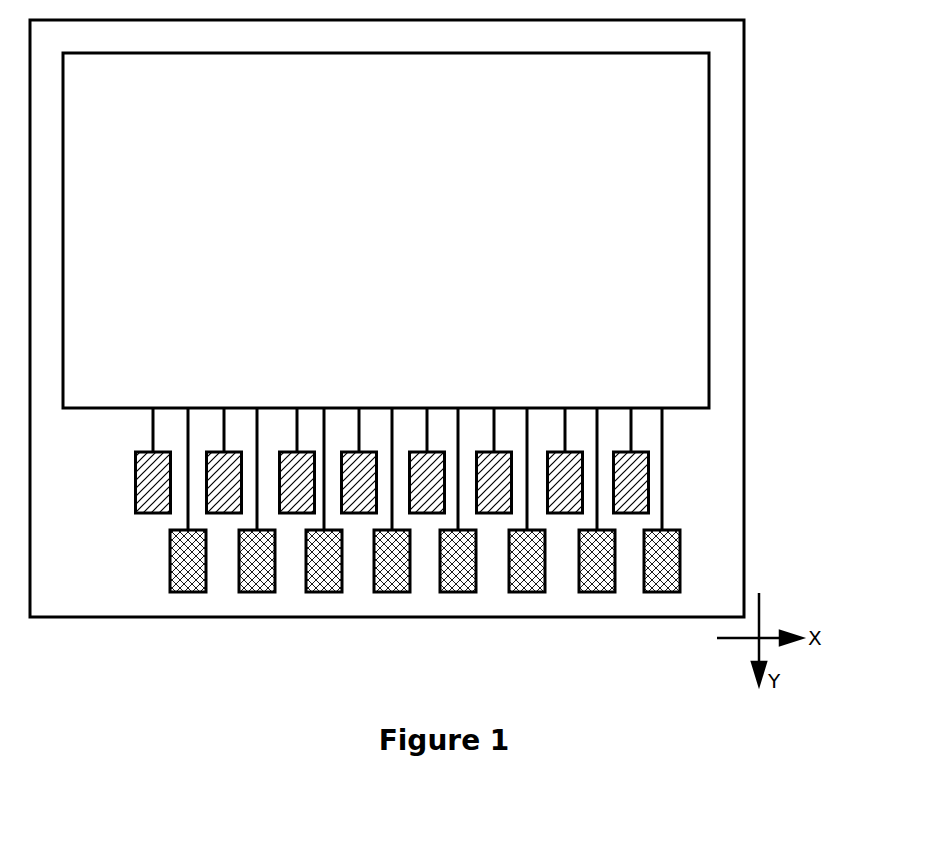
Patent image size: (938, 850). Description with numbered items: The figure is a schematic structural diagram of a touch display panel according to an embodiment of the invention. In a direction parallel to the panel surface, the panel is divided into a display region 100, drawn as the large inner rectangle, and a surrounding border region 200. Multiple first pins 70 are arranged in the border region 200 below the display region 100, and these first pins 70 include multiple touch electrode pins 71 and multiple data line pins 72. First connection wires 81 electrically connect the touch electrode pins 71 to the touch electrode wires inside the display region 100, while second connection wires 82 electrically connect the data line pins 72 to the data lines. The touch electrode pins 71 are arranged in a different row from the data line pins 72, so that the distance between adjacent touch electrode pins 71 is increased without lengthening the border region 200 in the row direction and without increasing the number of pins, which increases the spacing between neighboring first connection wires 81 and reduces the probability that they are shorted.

The display region 100 is at (675, 203).
The border region 200 is at (723, 258).
The first pins 70 is at (498, 500).
The touch electrode pins 71 is at (648, 481).
The data line pins 72 is at (680, 562).
The first connection wires 81 is at (631, 433).
The second connection wires 82 is at (662, 508).